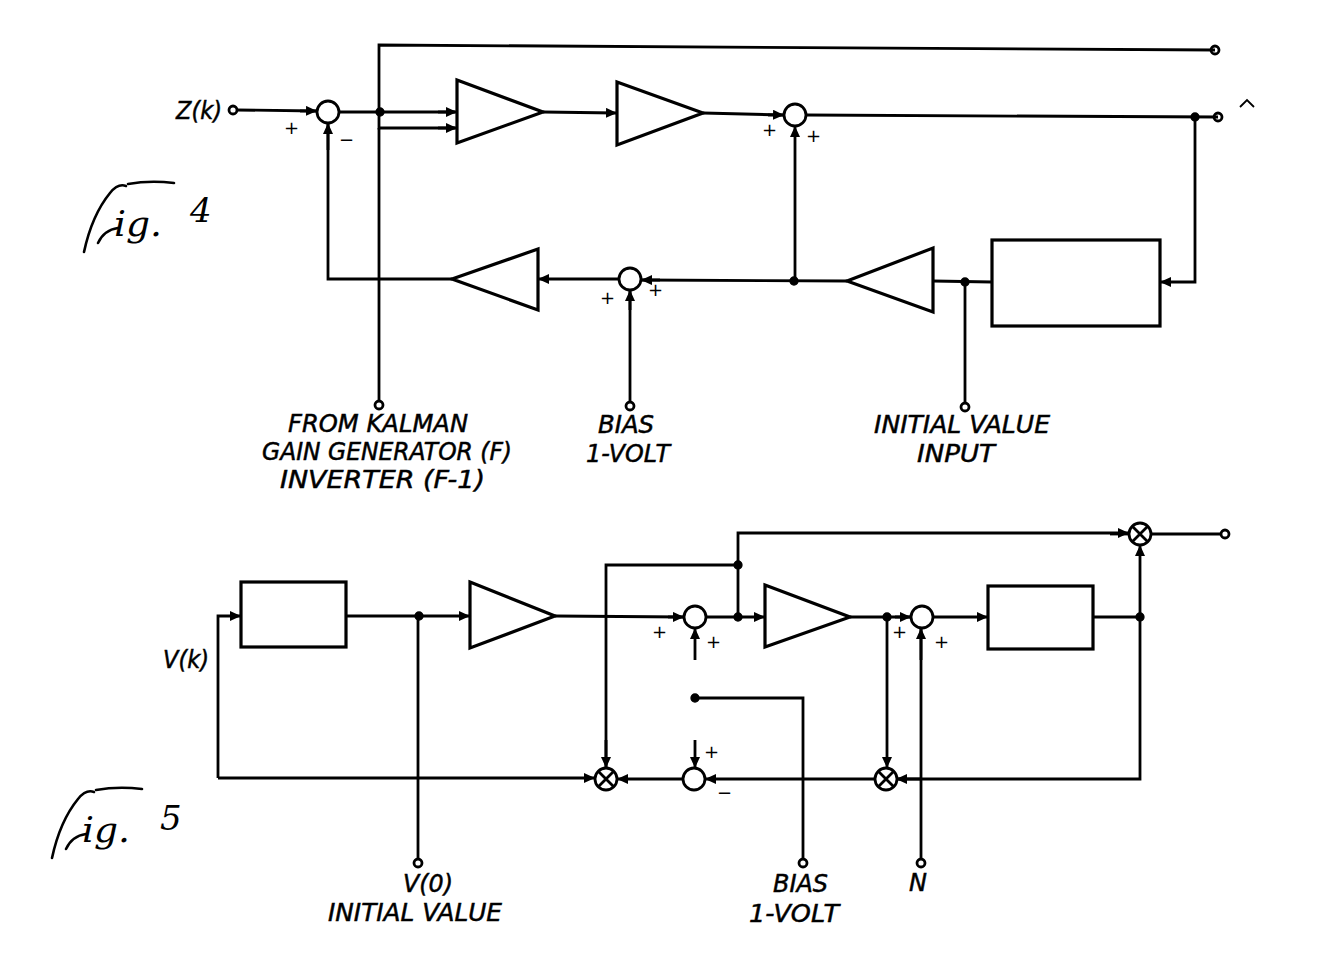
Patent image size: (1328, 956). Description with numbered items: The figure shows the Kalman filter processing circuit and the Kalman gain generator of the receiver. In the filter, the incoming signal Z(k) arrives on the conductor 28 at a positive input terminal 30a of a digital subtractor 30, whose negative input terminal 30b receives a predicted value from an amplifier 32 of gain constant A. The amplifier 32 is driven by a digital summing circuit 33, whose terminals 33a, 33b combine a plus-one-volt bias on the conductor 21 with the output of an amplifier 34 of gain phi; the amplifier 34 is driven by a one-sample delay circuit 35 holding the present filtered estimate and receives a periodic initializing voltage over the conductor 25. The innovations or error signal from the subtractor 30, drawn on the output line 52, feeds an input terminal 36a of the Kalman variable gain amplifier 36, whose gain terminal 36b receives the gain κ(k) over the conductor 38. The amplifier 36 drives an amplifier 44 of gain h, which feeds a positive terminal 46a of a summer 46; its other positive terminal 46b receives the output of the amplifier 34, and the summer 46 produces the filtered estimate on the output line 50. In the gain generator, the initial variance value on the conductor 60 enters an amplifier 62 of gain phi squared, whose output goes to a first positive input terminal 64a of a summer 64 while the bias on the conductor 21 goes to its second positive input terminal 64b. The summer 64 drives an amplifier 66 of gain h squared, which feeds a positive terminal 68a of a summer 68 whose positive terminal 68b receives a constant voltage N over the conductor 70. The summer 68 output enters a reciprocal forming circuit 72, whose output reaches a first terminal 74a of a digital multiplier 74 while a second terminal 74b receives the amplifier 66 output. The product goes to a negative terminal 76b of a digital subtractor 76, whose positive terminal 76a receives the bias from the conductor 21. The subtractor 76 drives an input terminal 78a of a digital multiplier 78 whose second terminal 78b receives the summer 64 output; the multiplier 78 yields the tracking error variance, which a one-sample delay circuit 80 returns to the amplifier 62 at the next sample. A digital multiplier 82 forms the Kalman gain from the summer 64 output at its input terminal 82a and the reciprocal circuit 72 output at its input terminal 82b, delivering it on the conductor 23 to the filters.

In FIG. 4, the conductor 28 is at (258, 108).
In FIG. 4, the digital subtractor 30 is at (330, 100).
In FIG. 4, the positive input terminal 30a is at (319, 105).
In FIG. 4, the negative input terminal 30b is at (323, 124).
In FIG. 4, the Kalman variable gain amplifier 36 is at (505, 136).
In FIG. 4, the input terminal 36a is at (452, 107).
In FIG. 4, the gain terminal 36b is at (452, 131).
In FIG. 4, the amplifier 44 is at (665, 98).
In FIG. 4, the digital summing circuit 46 is at (805, 105).
In FIG. 4, the positive terminal 46a is at (786, 108).
In FIG. 4, the positive terminal 46b is at (792, 128).
In FIG. 4, the innovation output line I(k) 52 is at (1150, 48).
In FIG. 4, the state estimate output line x(k) 50 is at (1166, 114).
In FIG. 4, the one-sample delay circuit 35 is at (1075, 240).
In FIG. 4, the amplifier 34 is at (871, 265).
In FIG. 4, the digital summing circuit 33 is at (620, 270).
In FIG. 4, the first input of summing junction 33 33a is at (642, 272).
In FIG. 4, the second input of summing junction 33 33b is at (640, 290).
In FIG. 4, the amplifier 32 is at (486, 268).
In FIG. 4, the conductor 38 is at (383, 367).
In FIG. 4, the conductor 21 is at (633, 381).
In FIG. 5, the conductor 21 is at (803, 822).
In FIG. 4, the conductor 25 is at (968, 381).
In FIG. 5, the one-sample delay circuit 80 is at (262, 582).
In FIG. 5, the amplifier 62 is at (521, 596).
In FIG. 5, the digital summing circuit 64 is at (700, 606).
In FIG. 5, the first positive input terminal 64a is at (681, 611).
In FIG. 5, the second positive input terminal 64b is at (691, 630).
In FIG. 5, the amplifier 66 is at (820, 601).
In FIG. 5, the digital summing circuit 68 is at (926, 606).
In FIG. 5, the positive terminal 68a is at (910, 611).
In FIG. 5, the positive terminal 68b is at (935, 630).
In FIG. 5, the reciprocal forming circuit 72 is at (1041, 586).
In FIG. 5, the digital multiplier 82 is at (1138, 522).
In FIG. 5, the input terminal 82a is at (1128, 528).
In FIG. 5, the input terminal 82b is at (1147, 545).
In FIG. 5, the conductor 23 is at (1192, 532).
In FIG. 5, the digital multiplier 78 is at (597, 788).
In FIG. 5, the input terminal 78a is at (611, 790).
In FIG. 5, the second terminal 78b is at (600, 765).
In FIG. 5, the digital subtractor 76 is at (685, 790).
In FIG. 5, the positive terminal 76a is at (689, 767).
In FIG. 5, the negative terminal 76b is at (702, 790).
In FIG. 5, the digital multiplier 74 is at (876, 790).
In FIG. 5, the first terminal 74a is at (891, 792).
In FIG. 5, the second terminal 74b is at (883, 767).
In FIG. 5, the conductor 70 is at (923, 848).
In FIG. 5, the conductor 60 is at (421, 827).